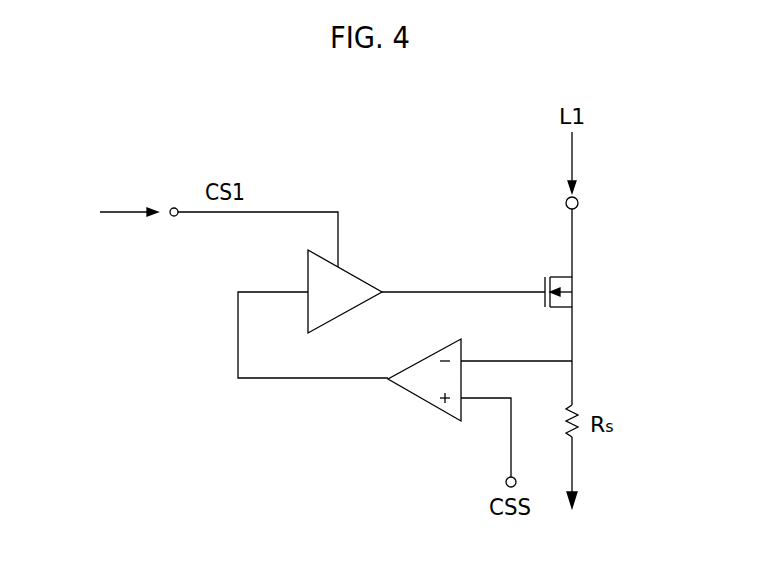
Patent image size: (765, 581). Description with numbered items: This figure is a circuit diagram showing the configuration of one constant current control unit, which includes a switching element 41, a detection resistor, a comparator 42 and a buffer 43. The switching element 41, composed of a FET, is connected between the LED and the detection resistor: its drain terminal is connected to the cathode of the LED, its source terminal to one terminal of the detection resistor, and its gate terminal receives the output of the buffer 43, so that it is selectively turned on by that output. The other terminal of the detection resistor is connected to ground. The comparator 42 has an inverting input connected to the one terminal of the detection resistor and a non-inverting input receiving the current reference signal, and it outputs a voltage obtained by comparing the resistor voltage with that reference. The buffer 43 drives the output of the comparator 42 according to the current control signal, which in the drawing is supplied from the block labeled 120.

The controller 120 is at (116, 213).
The switching element 41 is at (580, 285).
The comparator 42 is at (425, 357).
The buffer 43 is at (350, 270).